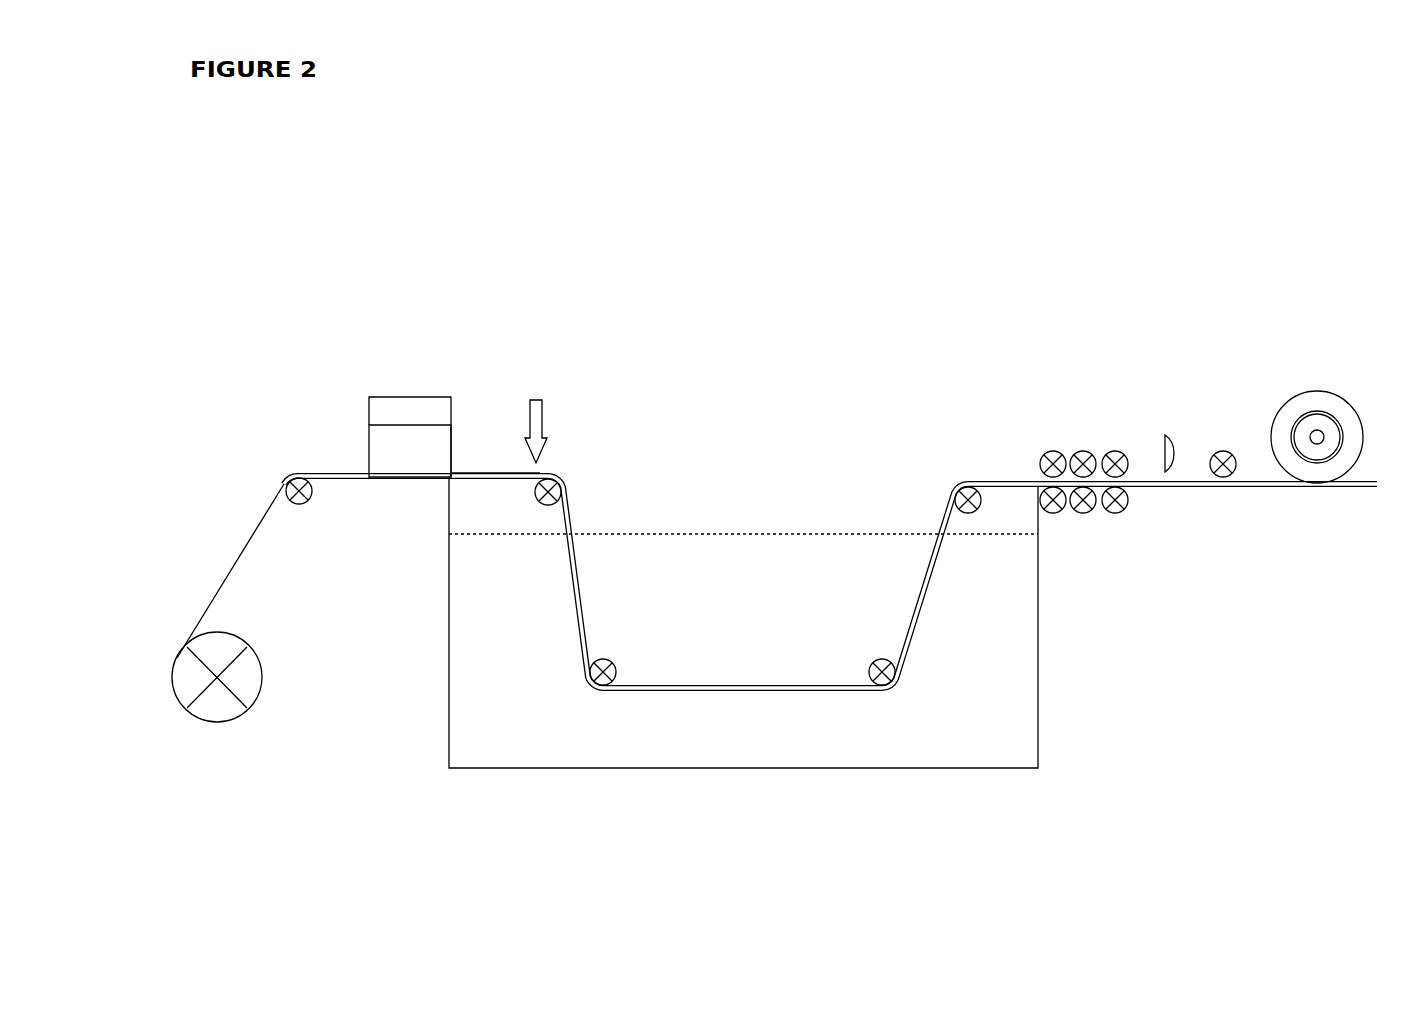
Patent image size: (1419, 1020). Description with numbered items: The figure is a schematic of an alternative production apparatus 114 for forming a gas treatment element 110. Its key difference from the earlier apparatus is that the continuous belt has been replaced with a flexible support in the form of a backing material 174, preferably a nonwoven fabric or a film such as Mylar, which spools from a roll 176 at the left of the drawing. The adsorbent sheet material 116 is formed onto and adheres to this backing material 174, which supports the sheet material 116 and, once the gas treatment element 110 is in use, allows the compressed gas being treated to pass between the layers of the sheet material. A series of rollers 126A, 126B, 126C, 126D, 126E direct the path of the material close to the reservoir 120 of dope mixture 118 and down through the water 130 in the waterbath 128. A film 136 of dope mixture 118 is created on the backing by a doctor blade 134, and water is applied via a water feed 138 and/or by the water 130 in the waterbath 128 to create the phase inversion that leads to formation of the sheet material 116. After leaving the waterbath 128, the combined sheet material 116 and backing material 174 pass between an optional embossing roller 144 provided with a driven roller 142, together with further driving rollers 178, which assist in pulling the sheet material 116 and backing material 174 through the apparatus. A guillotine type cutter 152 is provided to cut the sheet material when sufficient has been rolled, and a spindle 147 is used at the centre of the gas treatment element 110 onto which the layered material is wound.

The gas treatment element 110 is at (1345, 403).
The production apparatus 114 is at (750, 353).
The adsorbent sheet material 116 is at (938, 533).
The dope mixture 118 is at (393, 454).
The reservoir 120 is at (393, 410).
The roller 126A is at (290, 491).
The roller 126B is at (562, 482).
The roller 126C is at (591, 690).
The roller 126D is at (886, 690).
The roller 126E is at (955, 485).
The waterbath 128 is at (1033, 703).
The water 130 is at (487, 698).
The doctor blade 134 is at (453, 440).
The film 136 is at (472, 475).
The water feed 138 is at (537, 427).
The driven roller 142 is at (1053, 513).
The embossing roller 144 is at (1040, 460).
The spindle 147 is at (1302, 425).
The guillotine type cutter 152 is at (1163, 450).
The backing material 174 is at (225, 580).
The roll 176 is at (237, 673).
The driving rollers 178 is at (1125, 572).